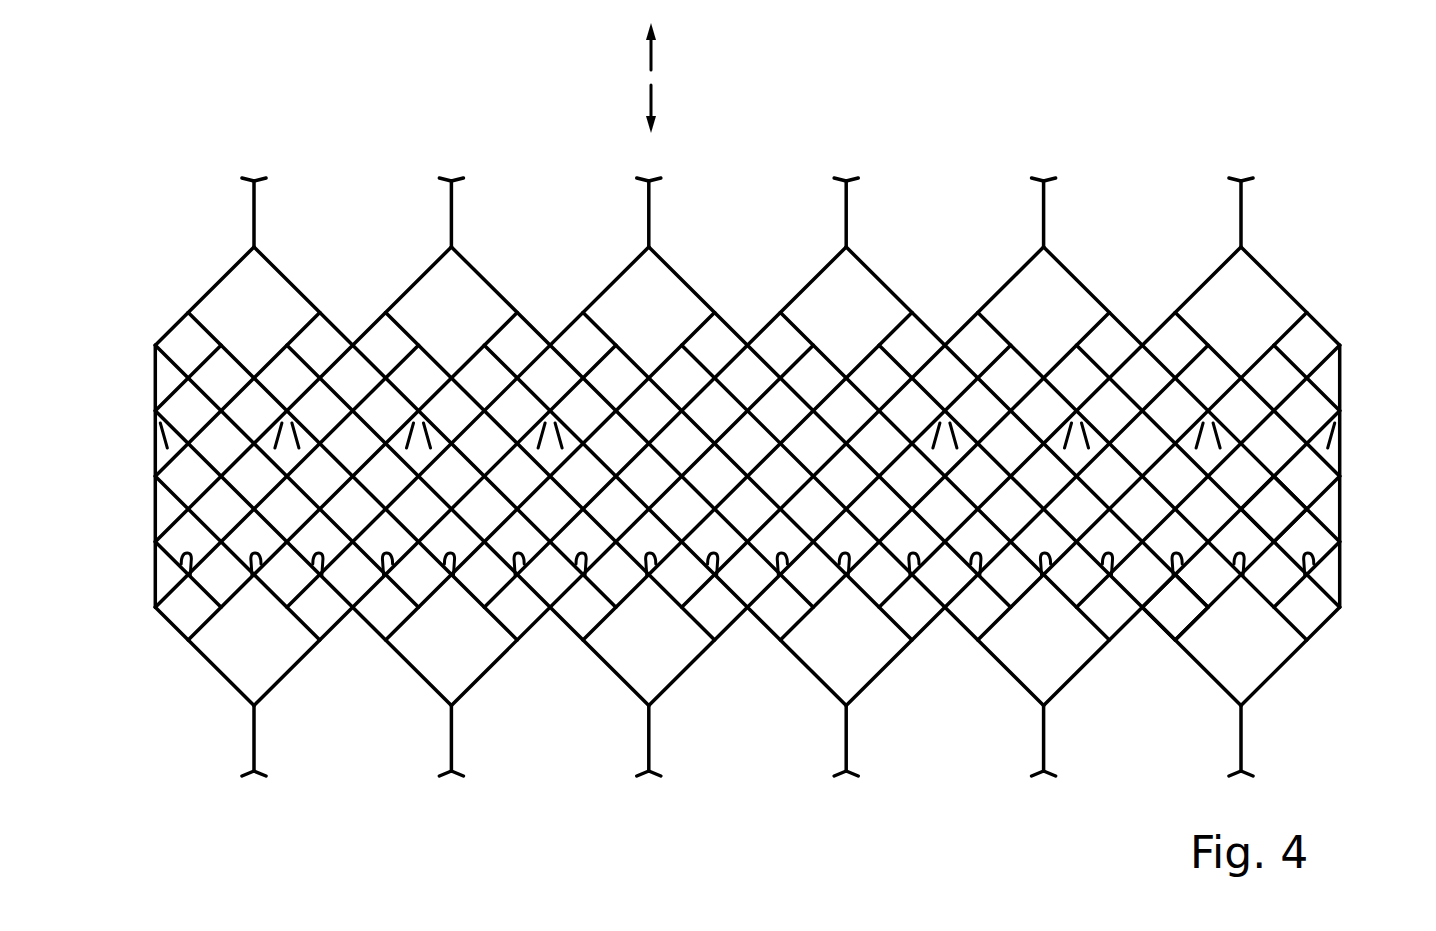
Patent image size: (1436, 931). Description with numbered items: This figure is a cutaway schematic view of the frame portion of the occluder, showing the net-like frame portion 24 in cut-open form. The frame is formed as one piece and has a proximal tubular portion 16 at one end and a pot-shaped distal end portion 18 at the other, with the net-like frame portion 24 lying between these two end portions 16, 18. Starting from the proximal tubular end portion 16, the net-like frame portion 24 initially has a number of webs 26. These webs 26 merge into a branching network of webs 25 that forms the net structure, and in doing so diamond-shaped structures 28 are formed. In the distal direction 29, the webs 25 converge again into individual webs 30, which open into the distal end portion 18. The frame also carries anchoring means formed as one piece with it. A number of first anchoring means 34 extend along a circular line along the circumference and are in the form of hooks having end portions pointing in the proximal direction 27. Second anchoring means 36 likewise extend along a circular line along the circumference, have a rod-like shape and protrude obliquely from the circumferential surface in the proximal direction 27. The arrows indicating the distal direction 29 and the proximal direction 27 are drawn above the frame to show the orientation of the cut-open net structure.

The proximal tubular portion 16 is at (256, 776).
The pot-shaped distal end portion 18 is at (258, 178).
The net-like frame portion 24 is at (132, 196).
The branching network of webs 25 is at (1173, 607).
The webs 26 is at (256, 743).
The proximal direction 27 is at (653, 95).
The diamond-shaped structures 28 is at (1270, 507).
The distal direction 29 is at (653, 57).
The individual webs 30 is at (257, 220).
The first anchoring means 34 is at (186, 562).
The second anchoring means 36 is at (168, 438).